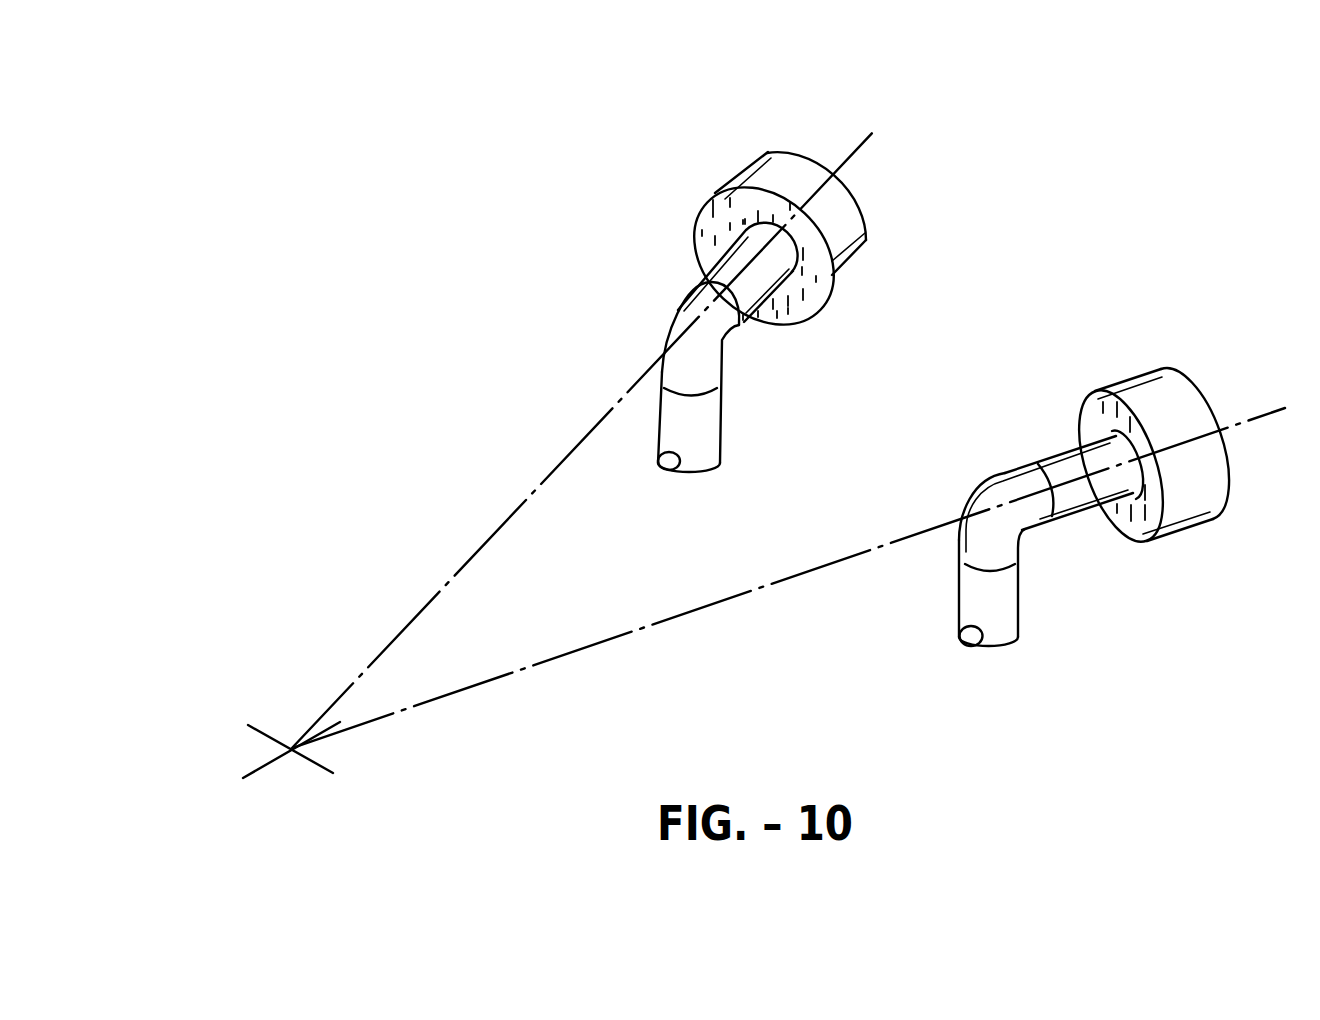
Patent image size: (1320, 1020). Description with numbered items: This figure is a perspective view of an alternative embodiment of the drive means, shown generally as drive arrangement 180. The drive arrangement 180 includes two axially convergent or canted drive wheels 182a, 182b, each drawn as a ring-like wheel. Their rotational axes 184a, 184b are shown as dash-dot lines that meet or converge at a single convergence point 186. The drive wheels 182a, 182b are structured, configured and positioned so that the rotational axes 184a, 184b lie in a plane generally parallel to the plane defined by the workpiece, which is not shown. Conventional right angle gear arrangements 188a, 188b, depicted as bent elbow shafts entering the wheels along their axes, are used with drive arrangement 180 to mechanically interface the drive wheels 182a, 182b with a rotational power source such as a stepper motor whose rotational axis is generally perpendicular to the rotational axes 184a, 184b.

The drive arrangement 180 is at (452, 114).
The drive wheel 182a is at (1170, 372).
The drive wheel 182b is at (743, 170).
The rotational axis 184a is at (683, 617).
The rotational axis 184b is at (483, 547).
The convergence point 186 is at (292, 748).
The right angle gear arrangement 188a is at (1020, 545).
The right angle gear arrangement 188b is at (676, 312).